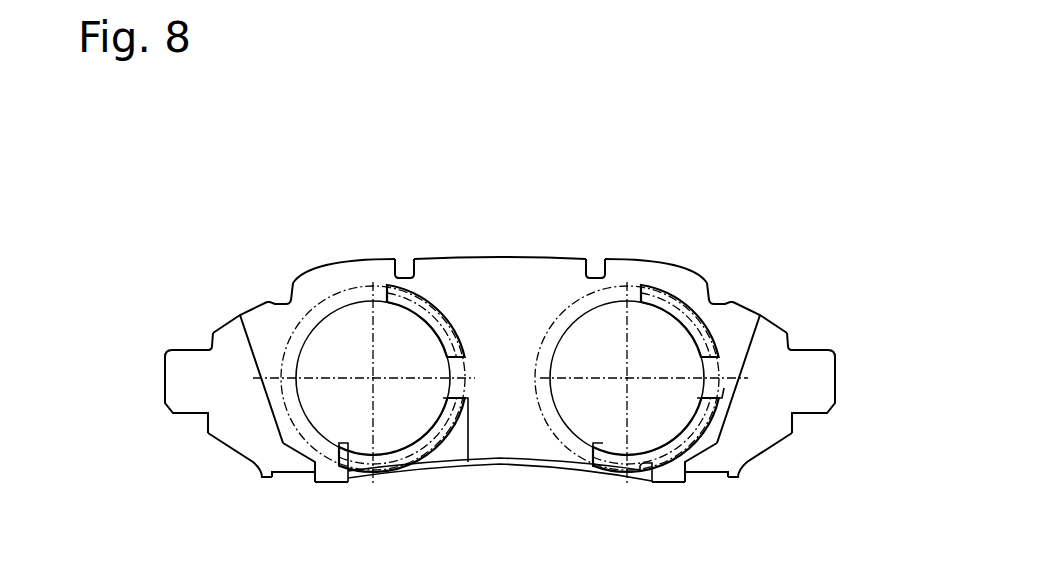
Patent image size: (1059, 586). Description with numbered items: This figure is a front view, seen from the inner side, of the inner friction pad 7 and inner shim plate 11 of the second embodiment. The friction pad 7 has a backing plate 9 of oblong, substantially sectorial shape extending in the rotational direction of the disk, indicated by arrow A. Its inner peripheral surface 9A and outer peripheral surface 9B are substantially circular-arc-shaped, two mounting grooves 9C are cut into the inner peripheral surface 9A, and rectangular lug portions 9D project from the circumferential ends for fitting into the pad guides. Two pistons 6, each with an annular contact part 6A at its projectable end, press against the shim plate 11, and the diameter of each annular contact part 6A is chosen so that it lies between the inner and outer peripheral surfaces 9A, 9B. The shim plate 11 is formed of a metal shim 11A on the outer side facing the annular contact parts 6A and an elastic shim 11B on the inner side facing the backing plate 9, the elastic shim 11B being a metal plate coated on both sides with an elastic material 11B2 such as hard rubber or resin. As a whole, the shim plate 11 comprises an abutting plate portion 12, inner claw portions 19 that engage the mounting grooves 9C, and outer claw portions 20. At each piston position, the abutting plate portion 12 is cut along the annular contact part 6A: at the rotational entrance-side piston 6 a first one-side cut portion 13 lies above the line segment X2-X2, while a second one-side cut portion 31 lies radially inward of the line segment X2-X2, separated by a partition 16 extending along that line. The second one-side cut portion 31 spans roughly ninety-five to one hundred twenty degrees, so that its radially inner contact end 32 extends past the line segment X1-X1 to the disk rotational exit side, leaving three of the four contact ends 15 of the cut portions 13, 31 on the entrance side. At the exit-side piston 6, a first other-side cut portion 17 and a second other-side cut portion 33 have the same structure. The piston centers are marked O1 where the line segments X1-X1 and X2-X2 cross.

The piston 6 is at (322, 309).
The annular contact part 6A is at (352, 298).
The friction pad 7 is at (779, 326).
The backing plate 9 is at (226, 435).
The inner peripheral surface 9A is at (518, 466).
The outer peripheral surface 9B is at (283, 296).
The mounting groove 9C is at (287, 476).
The lug portion 9D is at (178, 362).
The shim plate 11 is at (562, 258).
The metal shim 11A is at (558, 456).
The elastic shim 11B is at (743, 467).
The elastic material 11B2 is at (446, 448).
The abutting plate portion 12 is at (532, 278).
The first one-side cut portion 13 is at (690, 313).
The contact end 15 is at (394, 278).
The partition 16 is at (472, 362).
The first other-side cut portion 17 is at (413, 262).
The inner claw portion 19 is at (328, 484).
The outer claw portion 20 is at (250, 308).
The second one-side cut portion 31 is at (662, 475).
The contact end 32 is at (355, 484).
The second other-side cut portion 33 is at (427, 453).
The arrow A is at (532, 203).
The bore center O1 is at (372, 377).
The line segment X1- X1 is at (502, 382).
The line segment X2- X2 is at (499, 379).